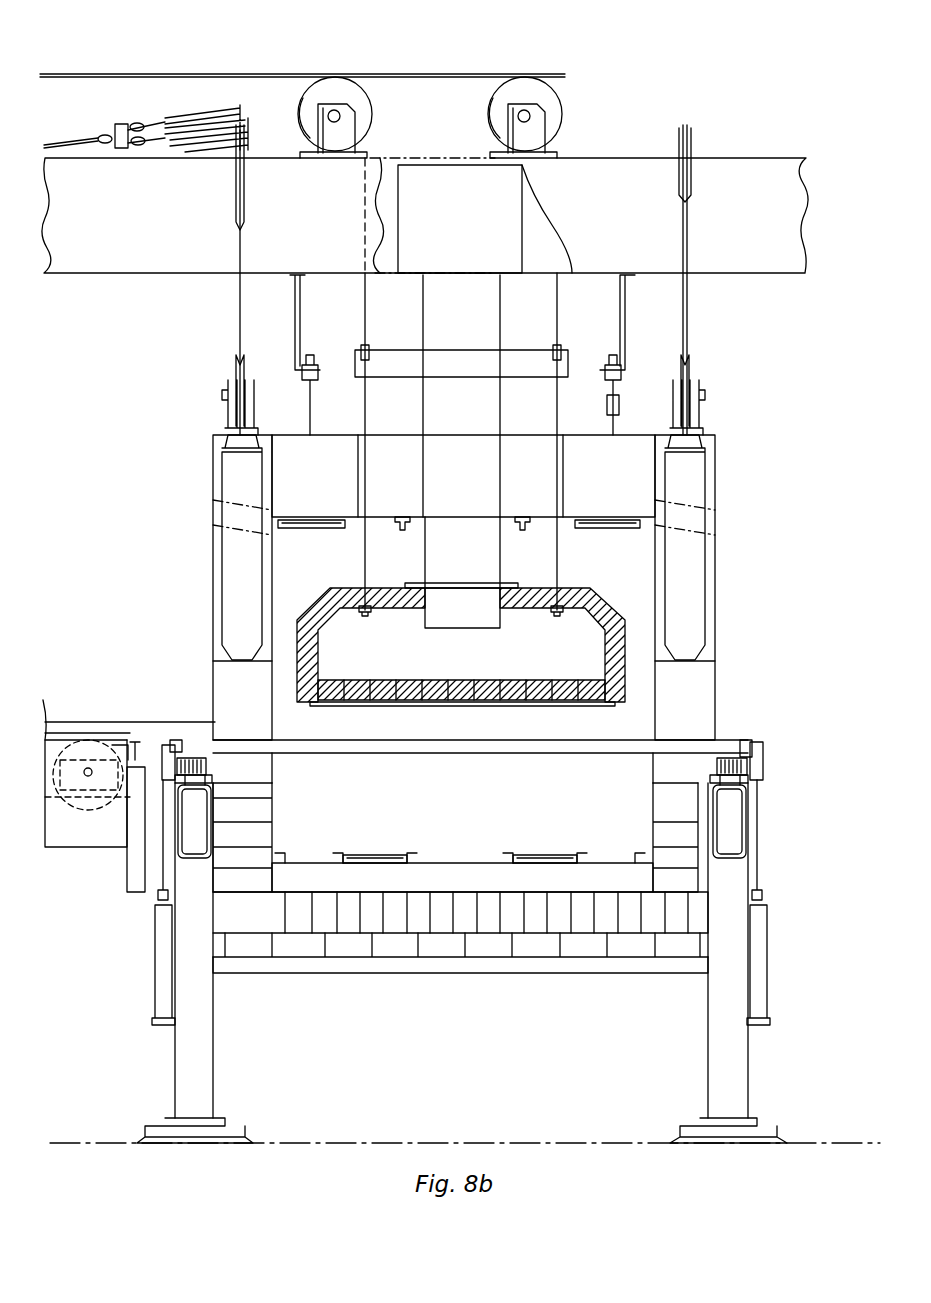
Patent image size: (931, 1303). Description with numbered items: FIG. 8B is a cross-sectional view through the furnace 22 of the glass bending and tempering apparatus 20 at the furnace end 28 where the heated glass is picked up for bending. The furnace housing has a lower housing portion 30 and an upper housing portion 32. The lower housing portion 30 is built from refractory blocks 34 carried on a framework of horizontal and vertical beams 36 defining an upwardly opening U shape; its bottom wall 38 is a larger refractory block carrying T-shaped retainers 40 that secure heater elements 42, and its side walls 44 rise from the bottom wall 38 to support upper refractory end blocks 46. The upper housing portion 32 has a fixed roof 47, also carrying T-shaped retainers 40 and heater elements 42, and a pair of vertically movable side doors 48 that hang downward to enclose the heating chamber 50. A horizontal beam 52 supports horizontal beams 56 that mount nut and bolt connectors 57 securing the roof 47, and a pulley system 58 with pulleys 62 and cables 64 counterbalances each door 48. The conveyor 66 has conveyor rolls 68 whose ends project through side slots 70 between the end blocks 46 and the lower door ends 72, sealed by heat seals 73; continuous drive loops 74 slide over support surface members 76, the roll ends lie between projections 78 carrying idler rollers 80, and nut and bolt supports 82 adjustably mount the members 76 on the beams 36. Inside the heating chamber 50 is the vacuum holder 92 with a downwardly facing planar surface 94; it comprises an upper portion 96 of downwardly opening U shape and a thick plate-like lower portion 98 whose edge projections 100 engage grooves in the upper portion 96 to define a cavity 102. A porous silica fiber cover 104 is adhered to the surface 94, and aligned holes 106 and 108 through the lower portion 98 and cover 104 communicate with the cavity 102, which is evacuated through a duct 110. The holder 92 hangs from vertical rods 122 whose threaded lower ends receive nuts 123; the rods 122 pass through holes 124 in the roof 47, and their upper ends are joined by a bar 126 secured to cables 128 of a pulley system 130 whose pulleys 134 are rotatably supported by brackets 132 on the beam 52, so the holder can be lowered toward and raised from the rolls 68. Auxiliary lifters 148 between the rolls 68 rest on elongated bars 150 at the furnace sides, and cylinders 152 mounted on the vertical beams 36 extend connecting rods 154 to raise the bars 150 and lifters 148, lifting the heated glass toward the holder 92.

The glass bending and tempering apparatus 20 is at (703, 125).
The furnace 22 is at (740, 361).
The furnace end 28 is at (722, 438).
The lower housing portion 30 is at (612, 979).
The upper housing portion 32 is at (620, 431).
The refractory blocks 34 is at (262, 862).
The horizontal and vertical beams 36 is at (215, 812).
The bottom wall 38 is at (455, 861).
The T-shaped retainers 40 is at (622, 529).
The heater elements 42 is at (590, 526).
The side walls 44 is at (275, 806).
The upper refractory end blocks 46 is at (275, 766).
The fixed roof 47 is at (500, 433).
The vertically movable side doors 48 is at (213, 531).
The heating chamber 50 is at (620, 729).
The horizontal beam 52 is at (745, 150).
The horizontal beams 56 is at (297, 322).
The nut and bolt connectors 57 is at (312, 386).
The pulley system 58 is at (238, 117).
The pulleys 62 is at (238, 196).
The cables 64 is at (76, 142).
The conveyor 66 is at (735, 729).
The conveyor rolls 68 is at (500, 707).
The side slots 70 is at (305, 713).
The lower ends of side doors 72 is at (225, 702).
The heat seals 73 is at (272, 731).
The continuous drive loops 74 is at (210, 768).
The support surface members 76 is at (215, 780).
The upwardly extending projections 78 is at (178, 750).
The idler rollers 80 is at (190, 762).
The nut and bolt supports 82 is at (462, 816).
The vacuum holder 92 is at (632, 613).
The downwardly facing planar surface 94 is at (472, 691).
The upper portion 96 is at (512, 589).
The lower portion 98 is at (448, 631).
The edge projections 100 is at (320, 689).
The cavity 102 is at (582, 601).
The sheet-like cover 104 is at (423, 707).
The holes 106 is at (398, 689).
The holes 108 is at (395, 701).
The duct 110 is at (440, 531).
The vertical rods 122 is at (370, 457).
The nuts 123 is at (368, 613).
The holes 124 is at (360, 476).
The bar 126 is at (440, 381).
The cables 128 is at (92, 81).
The pulley system 130 is at (560, 89).
The brackets 132 is at (340, 140).
The pulleys 134 is at (362, 113).
The auxiliary lifters 148 is at (178, 742).
The elongated bars 150 is at (165, 780).
The cylinders 152 is at (155, 962).
The connecting rods 154 is at (160, 887).